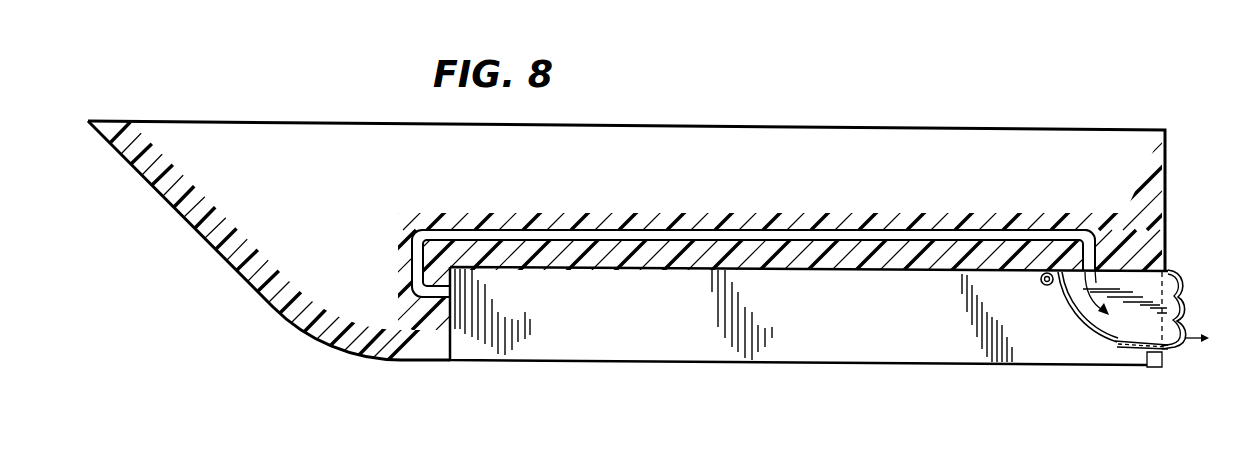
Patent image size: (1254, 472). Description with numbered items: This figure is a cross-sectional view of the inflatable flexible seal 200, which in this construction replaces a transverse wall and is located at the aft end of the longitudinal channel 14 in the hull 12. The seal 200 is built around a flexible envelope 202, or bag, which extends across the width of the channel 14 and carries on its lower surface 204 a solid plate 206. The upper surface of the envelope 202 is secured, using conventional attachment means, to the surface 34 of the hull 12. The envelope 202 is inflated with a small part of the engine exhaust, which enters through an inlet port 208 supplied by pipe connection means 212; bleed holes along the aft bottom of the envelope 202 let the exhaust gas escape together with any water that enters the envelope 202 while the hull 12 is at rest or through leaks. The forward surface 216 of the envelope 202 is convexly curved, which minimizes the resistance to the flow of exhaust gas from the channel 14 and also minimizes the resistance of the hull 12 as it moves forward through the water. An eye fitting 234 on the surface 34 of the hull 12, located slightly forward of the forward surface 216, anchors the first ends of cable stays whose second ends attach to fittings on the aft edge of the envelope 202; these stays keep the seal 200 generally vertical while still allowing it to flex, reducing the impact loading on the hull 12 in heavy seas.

The hull 12 is at (750, 126).
The channel 14 is at (866, 350).
The surface 34 is at (897, 272).
The flexible seal 200 is at (1133, 315).
The flexible envelope 202 is at (1177, 282).
The lower surface 204 is at (1149, 368).
The solid plate 206 is at (1171, 350).
The inlet port 208 is at (1081, 272).
The pipe connection means 212 is at (825, 239).
The forward surface 216 is at (1088, 324).
The eye fitting 234 is at (1041, 281).